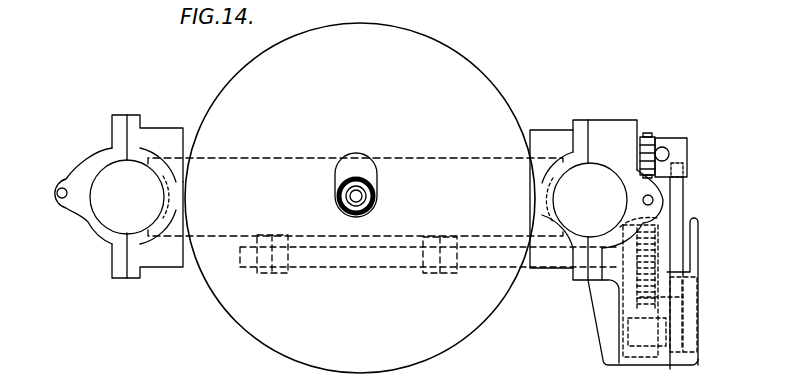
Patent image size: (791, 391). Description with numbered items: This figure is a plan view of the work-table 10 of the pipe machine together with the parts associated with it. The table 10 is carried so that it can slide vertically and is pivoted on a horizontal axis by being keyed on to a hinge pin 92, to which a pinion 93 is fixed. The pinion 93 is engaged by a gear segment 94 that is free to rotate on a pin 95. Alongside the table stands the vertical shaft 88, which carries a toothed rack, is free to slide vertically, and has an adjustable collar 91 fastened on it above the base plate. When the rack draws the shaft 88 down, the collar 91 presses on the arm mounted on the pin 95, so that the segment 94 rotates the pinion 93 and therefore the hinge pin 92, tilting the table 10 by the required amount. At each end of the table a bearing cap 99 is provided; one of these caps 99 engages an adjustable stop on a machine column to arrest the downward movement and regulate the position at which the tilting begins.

The work-table 10 is at (257, 75).
The vertical shaft 88 is at (658, 150).
The adjustable collar 91 is at (677, 145).
The hinge pin 92 is at (342, 252).
The pinion 93 is at (635, 295).
The gear segment 94 is at (633, 312).
The pin 95 is at (670, 368).
The table bearing cap 99 is at (88, 217).